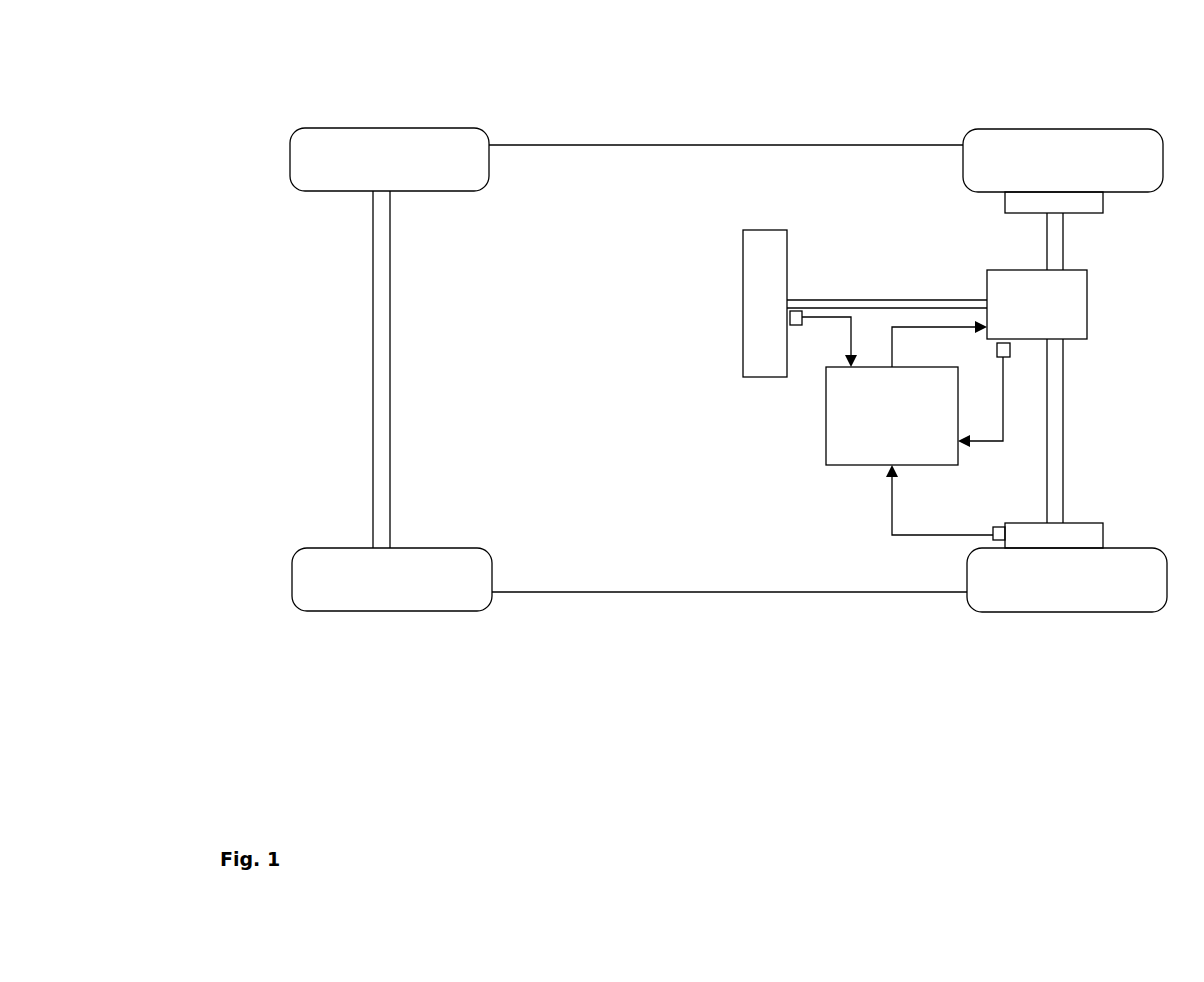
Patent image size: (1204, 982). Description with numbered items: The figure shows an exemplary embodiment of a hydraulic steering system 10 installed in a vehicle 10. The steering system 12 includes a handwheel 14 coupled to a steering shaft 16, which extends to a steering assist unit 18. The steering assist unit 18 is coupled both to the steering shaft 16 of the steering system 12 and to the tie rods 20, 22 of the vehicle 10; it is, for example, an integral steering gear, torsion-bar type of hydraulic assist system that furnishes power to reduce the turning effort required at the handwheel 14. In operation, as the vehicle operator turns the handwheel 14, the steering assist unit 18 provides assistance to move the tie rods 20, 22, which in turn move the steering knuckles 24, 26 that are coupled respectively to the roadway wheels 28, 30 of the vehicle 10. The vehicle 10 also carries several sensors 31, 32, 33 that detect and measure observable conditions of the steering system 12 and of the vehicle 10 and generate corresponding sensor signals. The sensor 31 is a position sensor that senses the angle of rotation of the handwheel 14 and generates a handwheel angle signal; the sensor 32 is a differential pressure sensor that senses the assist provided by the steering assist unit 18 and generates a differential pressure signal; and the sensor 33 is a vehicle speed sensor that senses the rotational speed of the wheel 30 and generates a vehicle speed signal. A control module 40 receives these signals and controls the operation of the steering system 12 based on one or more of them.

The vehicle 10 is at (762, 60).
The steering system 12 is at (860, 208).
The handwheel 14 is at (762, 230).
The steering shaft 16 is at (862, 300).
The steering assist unit 18 is at (1088, 300).
The tie rod 20 is at (1063, 255).
The tie rod 22 is at (1063, 406).
The steering knuckle 24 is at (1005, 196).
The steering knuckle 26 is at (1030, 523).
The roadway wheel 28 is at (1094, 128).
The roadway wheel 30 is at (1113, 548).
The position sensor 31 is at (793, 325).
The differential pressure sensor 32 is at (1010, 350).
The vehicle speed sensor 33 is at (1000, 525).
The control module 40 is at (908, 367).